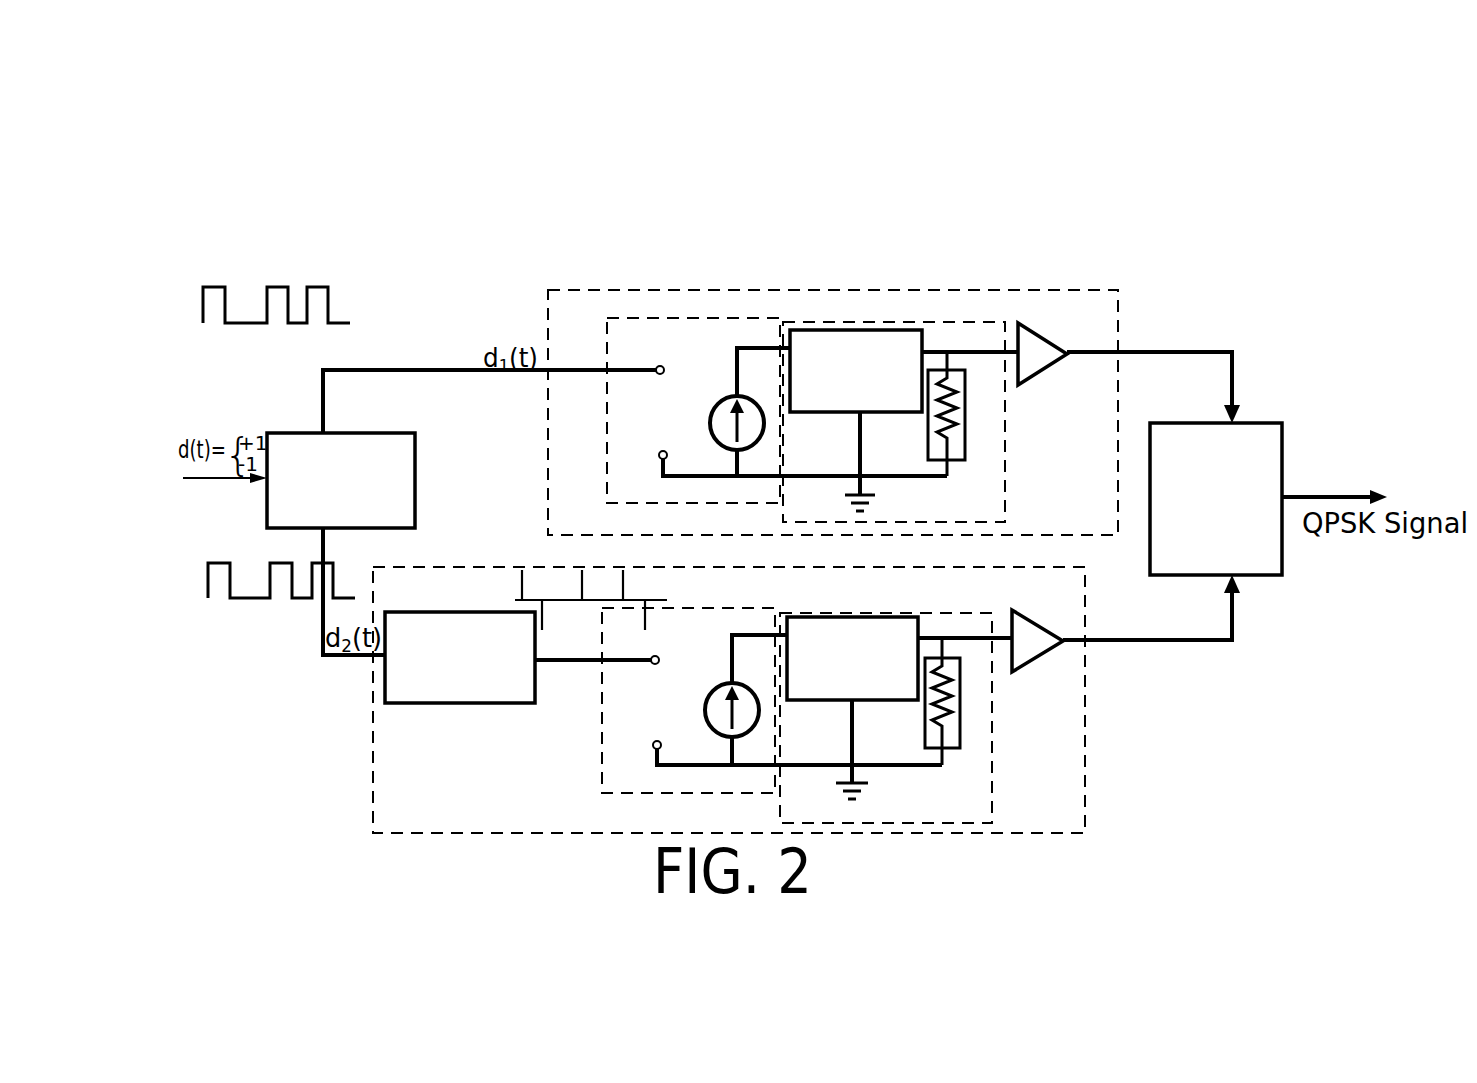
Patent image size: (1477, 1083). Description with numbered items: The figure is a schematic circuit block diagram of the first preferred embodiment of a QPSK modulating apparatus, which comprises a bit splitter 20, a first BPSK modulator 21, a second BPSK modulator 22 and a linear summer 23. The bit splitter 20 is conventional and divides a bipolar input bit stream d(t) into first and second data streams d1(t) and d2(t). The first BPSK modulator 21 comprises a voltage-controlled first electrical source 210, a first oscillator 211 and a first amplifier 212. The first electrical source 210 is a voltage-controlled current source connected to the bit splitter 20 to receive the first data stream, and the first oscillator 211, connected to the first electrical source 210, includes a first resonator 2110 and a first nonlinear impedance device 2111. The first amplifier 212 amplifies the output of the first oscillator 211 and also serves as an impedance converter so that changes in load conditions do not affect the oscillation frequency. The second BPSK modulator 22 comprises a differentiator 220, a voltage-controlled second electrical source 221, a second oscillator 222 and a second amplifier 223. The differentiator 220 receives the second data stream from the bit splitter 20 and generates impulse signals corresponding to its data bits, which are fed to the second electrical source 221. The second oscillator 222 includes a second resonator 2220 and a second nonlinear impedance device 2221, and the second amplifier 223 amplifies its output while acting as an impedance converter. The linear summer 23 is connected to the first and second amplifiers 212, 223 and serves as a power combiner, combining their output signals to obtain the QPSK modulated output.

The bit splitter 20 is at (393, 447).
The first binary phase shift keying (BPSK) modulator 21 is at (935, 300).
The first electrical source 210 is at (625, 425).
The first resonator 2110 is at (833, 412).
The first nonlinear impedance device 2111 is at (960, 437).
The first oscillator 211 is at (978, 508).
The first amplifier 212 is at (1035, 345).
The second binary phase shift keying (BPSK) modulator 22 is at (1063, 800).
The differentiator 220 is at (457, 686).
The second electrical source 221 is at (613, 753).
The second resonator 2220 is at (828, 686).
The second nonlinear impedance device 2221 is at (955, 722).
The second oscillator 222 is at (925, 620).
The second amplifier 223 is at (1045, 635).
The linear summer 23 is at (1258, 477).